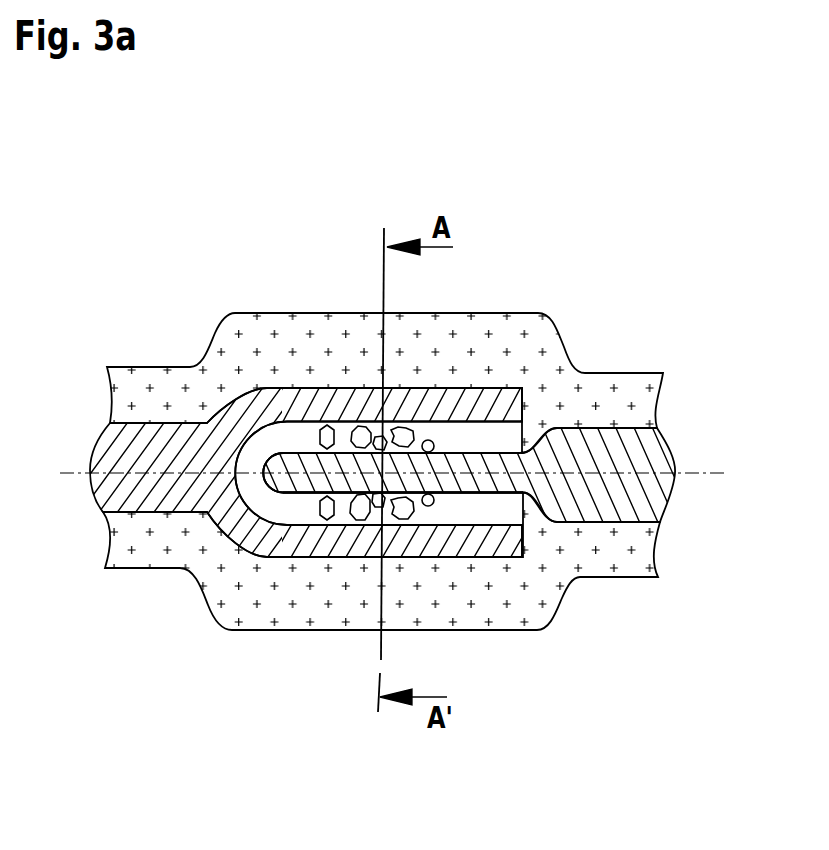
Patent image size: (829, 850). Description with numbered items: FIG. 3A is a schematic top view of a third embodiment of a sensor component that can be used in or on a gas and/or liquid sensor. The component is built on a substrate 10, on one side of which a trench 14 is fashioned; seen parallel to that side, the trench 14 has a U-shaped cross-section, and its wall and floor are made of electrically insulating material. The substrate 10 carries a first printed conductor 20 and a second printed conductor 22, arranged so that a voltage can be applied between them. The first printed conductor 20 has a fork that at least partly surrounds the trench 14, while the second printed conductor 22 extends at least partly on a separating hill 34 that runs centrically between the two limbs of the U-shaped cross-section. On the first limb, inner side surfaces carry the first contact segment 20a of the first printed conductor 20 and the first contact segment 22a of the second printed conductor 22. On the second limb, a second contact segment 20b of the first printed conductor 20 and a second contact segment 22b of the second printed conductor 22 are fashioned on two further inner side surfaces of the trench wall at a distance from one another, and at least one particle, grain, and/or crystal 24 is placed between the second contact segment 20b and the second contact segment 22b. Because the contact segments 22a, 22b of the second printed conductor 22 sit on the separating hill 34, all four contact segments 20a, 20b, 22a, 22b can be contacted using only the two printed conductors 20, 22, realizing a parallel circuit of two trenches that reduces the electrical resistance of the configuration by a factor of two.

The substrate 10 is at (608, 387).
The trench 14 is at (298, 437).
The first printed conductor 20 is at (135, 493).
The first contact segment of first printed conductor 20a is at (456, 403).
The second contact segment of first printed conductor 20b is at (322, 545).
The second printed conductor 22 is at (622, 503).
The first contact segment of second printed conductor 22a is at (503, 470).
The second contact segment of second printed conductor 22b is at (481, 505).
The particle, grain, and/or crystal 24 is at (327, 425).
The separating hill 34 is at (470, 465).